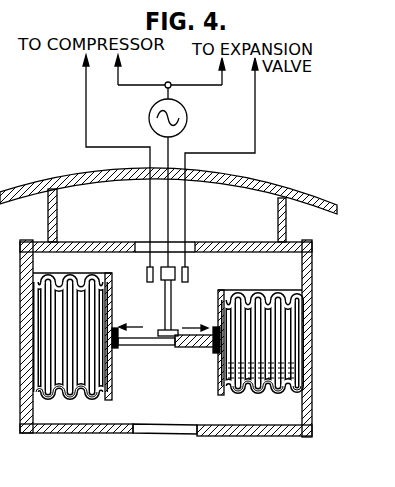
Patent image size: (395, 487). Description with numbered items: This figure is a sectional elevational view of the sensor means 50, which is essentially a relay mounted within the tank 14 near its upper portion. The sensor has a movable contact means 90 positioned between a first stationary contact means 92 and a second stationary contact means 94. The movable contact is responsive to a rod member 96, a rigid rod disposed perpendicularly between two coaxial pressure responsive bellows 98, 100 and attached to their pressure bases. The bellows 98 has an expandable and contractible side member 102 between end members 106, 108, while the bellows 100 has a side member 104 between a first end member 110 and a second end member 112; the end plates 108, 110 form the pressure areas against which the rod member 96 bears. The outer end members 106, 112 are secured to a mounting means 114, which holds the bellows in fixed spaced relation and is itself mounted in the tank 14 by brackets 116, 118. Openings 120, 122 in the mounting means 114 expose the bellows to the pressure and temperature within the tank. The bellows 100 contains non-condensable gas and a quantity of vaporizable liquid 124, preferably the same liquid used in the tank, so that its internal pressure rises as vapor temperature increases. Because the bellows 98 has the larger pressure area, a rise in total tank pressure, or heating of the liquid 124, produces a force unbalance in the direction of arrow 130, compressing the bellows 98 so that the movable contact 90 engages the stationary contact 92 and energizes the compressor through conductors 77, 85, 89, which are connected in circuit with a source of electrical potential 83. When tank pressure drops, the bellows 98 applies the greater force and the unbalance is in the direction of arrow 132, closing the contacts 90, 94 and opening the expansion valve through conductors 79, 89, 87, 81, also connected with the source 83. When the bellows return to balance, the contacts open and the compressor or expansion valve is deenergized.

The tank 14 is at (312, 193).
The sensor means 50 is at (175, 466).
The electrical conductor 77 is at (150, 193).
The electrical conductor 79 is at (168, 222).
The electrical conductor 81 is at (185, 198).
The source of electrical potential 83 is at (189, 120).
The electrical conductor 85 is at (118, 78).
The electrical conductor 87 is at (222, 76).
The electrical conductor 89 is at (165, 87).
The movable contact means 90 is at (171, 286).
The first stationary contact means 92 is at (147, 273).
The second stationary contact means 94 is at (188, 272).
The rod member 96 is at (153, 346).
The bellows 98 is at (90, 394).
The bellows 100 is at (256, 393).
The side member 102 is at (92, 276).
The side member 104 is at (246, 293).
The end member 106 is at (34, 392).
The end member 108 is at (113, 386).
The first end member 110 is at (222, 381).
The second end member 112 is at (300, 395).
The mounting means 114 is at (257, 437).
The bracket 116 is at (57, 205).
The bracket 118 is at (278, 218).
The opening 120 is at (138, 433).
The opening 122 is at (193, 251).
The vaporizable liquid 124 is at (219, 367).
The arrow 130 is at (133, 327).
The arrow 132 is at (192, 328).